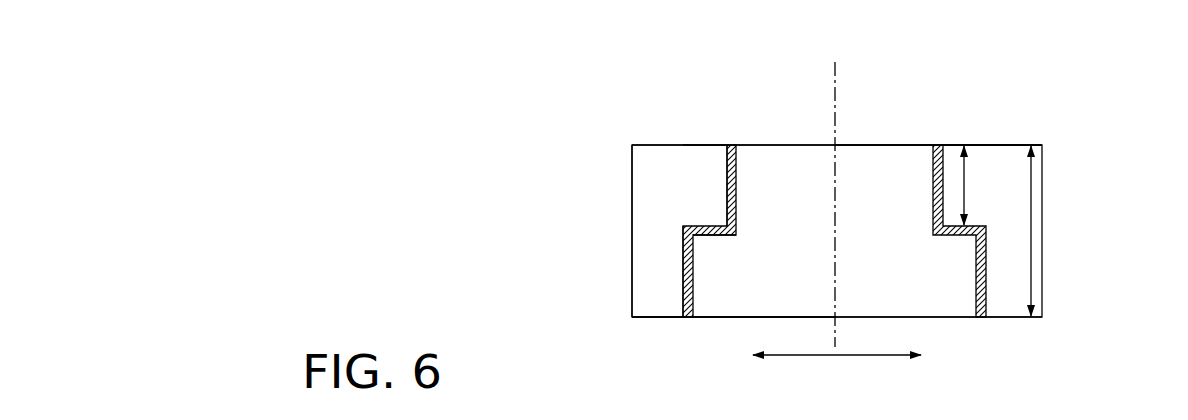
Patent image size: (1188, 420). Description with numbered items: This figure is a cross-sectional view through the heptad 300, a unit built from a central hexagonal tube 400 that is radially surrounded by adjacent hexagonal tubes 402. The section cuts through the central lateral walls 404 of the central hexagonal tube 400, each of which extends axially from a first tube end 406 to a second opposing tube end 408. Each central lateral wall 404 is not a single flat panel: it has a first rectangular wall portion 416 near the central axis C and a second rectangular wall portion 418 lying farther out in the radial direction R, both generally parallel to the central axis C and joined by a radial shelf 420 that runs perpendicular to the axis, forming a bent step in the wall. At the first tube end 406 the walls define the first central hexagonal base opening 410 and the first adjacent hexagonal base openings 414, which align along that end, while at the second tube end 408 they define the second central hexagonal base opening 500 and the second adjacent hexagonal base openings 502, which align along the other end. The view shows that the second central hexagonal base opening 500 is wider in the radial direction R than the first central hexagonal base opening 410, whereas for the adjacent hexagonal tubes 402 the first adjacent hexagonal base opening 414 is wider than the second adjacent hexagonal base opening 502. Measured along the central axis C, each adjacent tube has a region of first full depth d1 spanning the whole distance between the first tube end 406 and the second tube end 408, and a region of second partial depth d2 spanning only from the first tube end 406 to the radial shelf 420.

The heptad 300 is at (1052, 80).
The central hexagonal tube 400 is at (714, 308).
The adjacent hexagonal tube 402 is at (648, 211).
The central lateral wall 404 is at (728, 158).
The first tube end 406 is at (632, 145).
The second opposing tube end 408 is at (632, 316).
The first central hexagonal base opening 410 is at (862, 145).
The first adjacent hexagonal base opening 414 is at (690, 145).
The first rectangular wall portion 416 is at (727, 186).
The second rectangular wall portion 418 is at (683, 281).
The radial shelf 420 is at (714, 237).
The second central hexagonal base opening 500 is at (963, 318).
The second adjacent hexagonal base opening 502 is at (648, 318).
The central axis C is at (837, 75).
The radial direction R is at (835, 357).
The first full depth d1 is at (966, 184).
The second partial depth d2 is at (1031, 243).